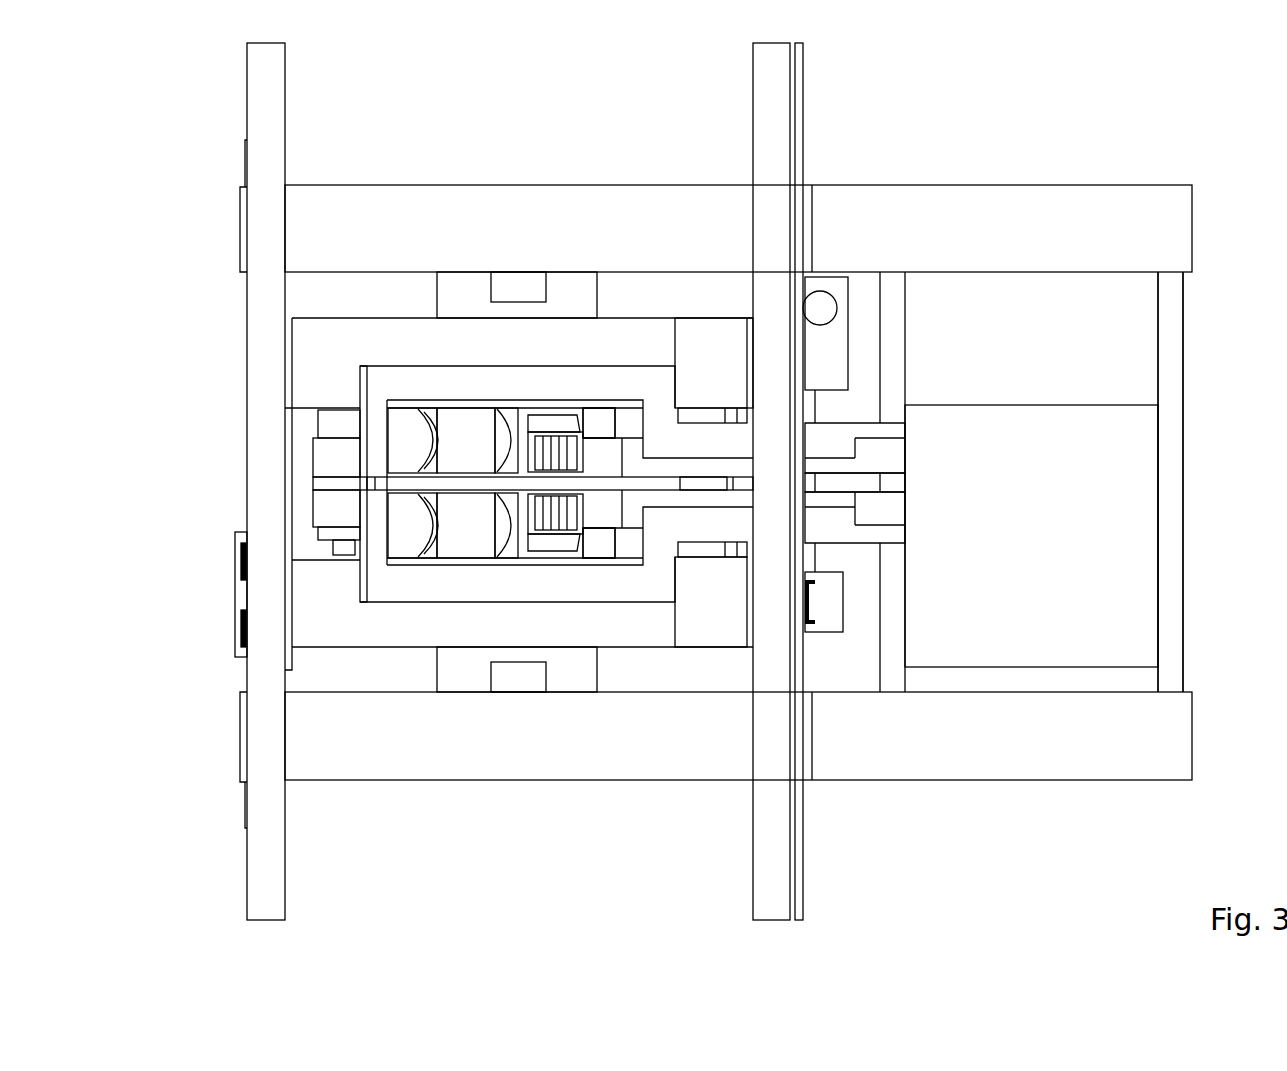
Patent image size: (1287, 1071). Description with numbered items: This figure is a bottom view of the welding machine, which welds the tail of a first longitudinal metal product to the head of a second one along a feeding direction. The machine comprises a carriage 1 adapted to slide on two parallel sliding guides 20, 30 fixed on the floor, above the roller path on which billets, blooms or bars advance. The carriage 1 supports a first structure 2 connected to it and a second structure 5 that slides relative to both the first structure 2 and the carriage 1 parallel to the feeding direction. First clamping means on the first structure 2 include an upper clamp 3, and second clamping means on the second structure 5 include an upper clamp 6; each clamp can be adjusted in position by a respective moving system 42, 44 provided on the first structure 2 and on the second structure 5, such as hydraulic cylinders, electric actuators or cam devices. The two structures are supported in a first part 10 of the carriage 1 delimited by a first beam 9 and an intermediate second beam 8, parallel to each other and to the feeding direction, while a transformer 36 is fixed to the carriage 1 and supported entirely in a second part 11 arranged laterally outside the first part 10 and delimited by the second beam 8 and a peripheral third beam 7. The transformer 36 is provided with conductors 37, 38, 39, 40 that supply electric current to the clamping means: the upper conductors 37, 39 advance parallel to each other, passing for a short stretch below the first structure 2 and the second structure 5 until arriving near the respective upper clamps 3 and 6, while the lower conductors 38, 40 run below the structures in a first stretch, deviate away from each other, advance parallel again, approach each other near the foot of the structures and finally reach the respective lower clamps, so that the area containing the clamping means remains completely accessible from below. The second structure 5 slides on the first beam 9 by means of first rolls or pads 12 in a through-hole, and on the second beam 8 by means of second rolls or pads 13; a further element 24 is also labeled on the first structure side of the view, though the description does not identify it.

The carriage 1 is at (1102, 120).
The first structure 2 is at (727, 340).
The upper clamp 3 is at (555, 443).
The second structure 5 is at (708, 615).
The upper clamp 6 is at (563, 511).
The third beam 7 is at (1170, 325).
The second beam 8 is at (748, 157).
The first beam 9 is at (245, 148).
The first part 10 is at (458, 172).
The second part 11 is at (990, 170).
The first rolls or pads 12 is at (240, 640).
The second rolls or pads 13 is at (847, 612).
The sliding guide 20 is at (268, 97).
The bearing block 24 is at (333, 428).
The sliding guide 30 is at (770, 75).
The transformer 36 is at (1108, 490).
The upper conductor 37 is at (718, 465).
The lower conductor 38 is at (432, 388).
The upper conductor 39 is at (690, 500).
The lower conductor 40 is at (333, 507).
The moving system 42 is at (418, 448).
The moving system 44 is at (397, 548).